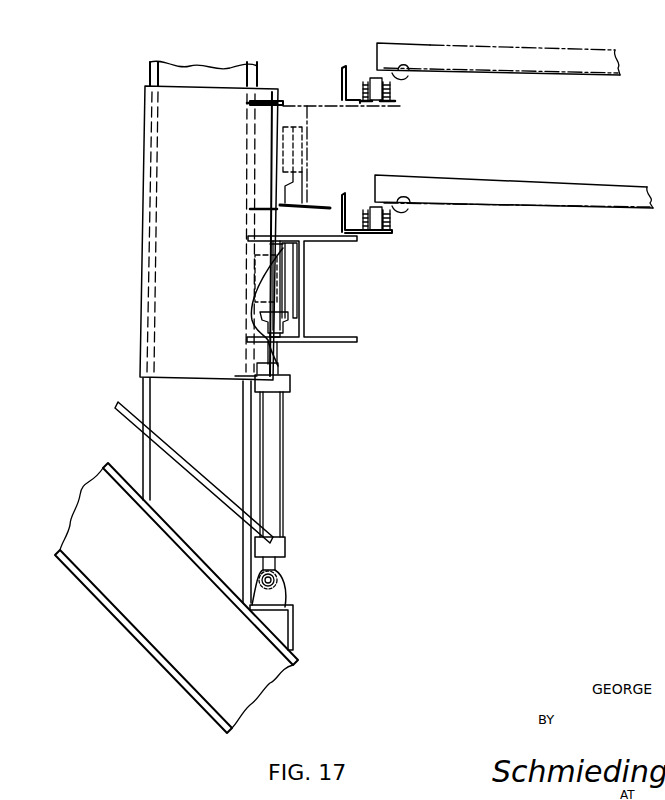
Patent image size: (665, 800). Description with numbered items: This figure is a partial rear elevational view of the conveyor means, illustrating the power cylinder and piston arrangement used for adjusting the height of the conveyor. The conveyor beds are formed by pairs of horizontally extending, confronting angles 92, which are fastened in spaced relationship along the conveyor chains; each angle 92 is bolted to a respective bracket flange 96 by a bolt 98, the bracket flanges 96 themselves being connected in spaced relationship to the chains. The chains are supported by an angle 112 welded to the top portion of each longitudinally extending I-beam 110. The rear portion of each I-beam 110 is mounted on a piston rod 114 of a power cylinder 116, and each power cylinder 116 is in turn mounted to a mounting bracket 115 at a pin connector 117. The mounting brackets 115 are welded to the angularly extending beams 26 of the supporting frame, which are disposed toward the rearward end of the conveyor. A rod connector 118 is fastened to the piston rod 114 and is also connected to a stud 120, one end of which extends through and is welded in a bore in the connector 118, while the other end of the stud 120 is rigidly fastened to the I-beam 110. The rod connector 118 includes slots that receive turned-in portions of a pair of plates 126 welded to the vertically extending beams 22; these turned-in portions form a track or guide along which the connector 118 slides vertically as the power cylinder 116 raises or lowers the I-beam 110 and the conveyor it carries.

The vertically extending beams 22 is at (142, 393).
The angularly extending beams 26 is at (100, 580).
The confronting angles 92 is at (500, 53).
The bracket flanges 96 is at (392, 80).
The bolt 98 is at (405, 66).
The I-beams 110 is at (307, 164).
The angle 112 is at (343, 67).
The piston rod 114 is at (286, 356).
The mounting bracket 115 is at (296, 620).
The power cylinders 116 is at (283, 459).
The pin connector 117 is at (283, 580).
The rod connector 118 is at (283, 253).
The stud 120 is at (298, 144).
The plates 126 is at (145, 184).